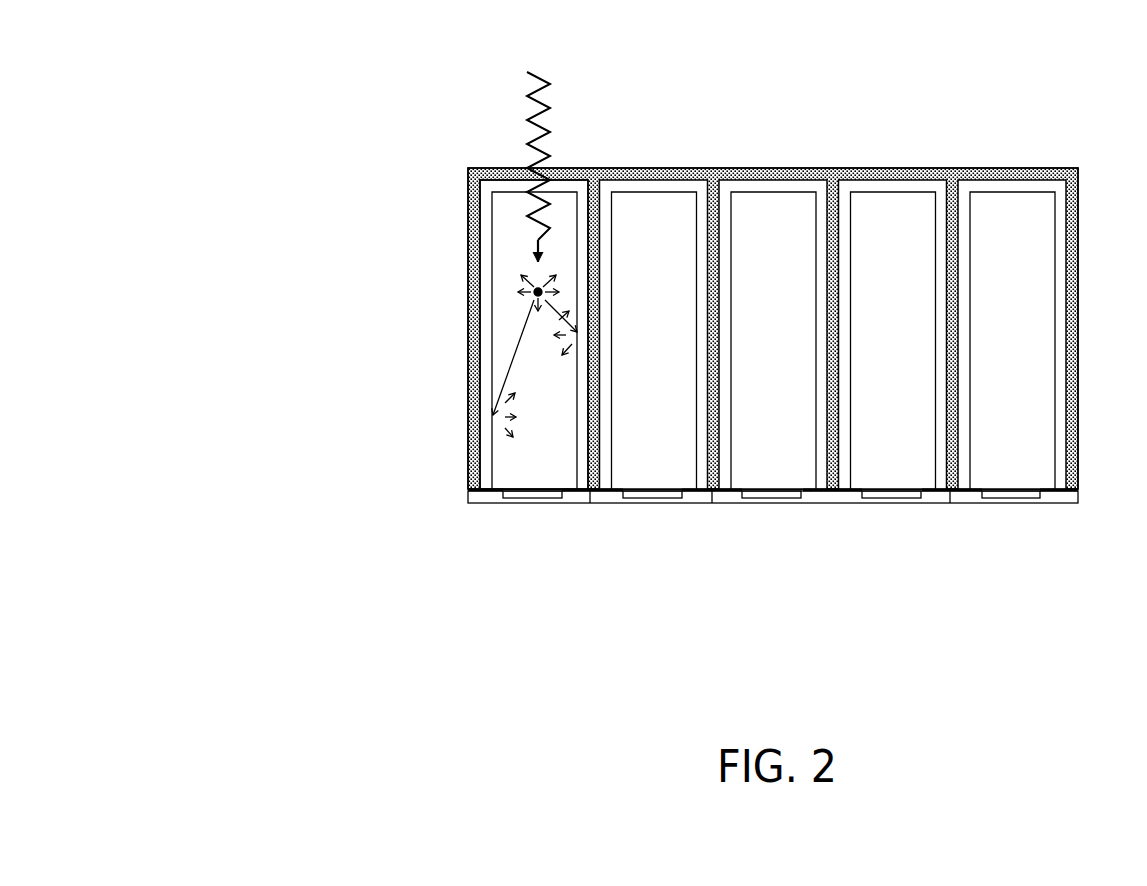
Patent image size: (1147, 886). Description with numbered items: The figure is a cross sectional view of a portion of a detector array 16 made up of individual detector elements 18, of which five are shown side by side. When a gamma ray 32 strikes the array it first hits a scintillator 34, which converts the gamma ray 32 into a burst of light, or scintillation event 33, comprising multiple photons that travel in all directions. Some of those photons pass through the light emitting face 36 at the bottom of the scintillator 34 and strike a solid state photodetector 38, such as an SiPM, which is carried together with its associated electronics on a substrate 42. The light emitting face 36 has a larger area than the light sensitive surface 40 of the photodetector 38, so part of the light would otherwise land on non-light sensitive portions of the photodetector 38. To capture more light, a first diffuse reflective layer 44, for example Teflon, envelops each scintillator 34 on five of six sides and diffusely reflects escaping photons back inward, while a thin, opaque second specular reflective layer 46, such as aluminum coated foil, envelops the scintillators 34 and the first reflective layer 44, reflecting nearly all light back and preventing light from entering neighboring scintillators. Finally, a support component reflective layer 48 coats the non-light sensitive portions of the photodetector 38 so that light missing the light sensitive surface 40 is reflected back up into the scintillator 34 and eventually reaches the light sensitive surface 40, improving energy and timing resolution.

The detector array 16 is at (312, 182).
The detector element 18 is at (492, 568).
The gamma ray 32 is at (543, 73).
The scintillation event 33 is at (546, 284).
The scintillator 34 is at (506, 330).
The light emitting face 36 is at (512, 485).
The solid state photodetector 38 is at (695, 498).
The light sensitive surface 40 is at (527, 498).
The substrate 42 is at (1062, 501).
The first diffuse reflective layer 44 is at (488, 210).
The second specular reflective layer 46 is at (825, 167).
The support component reflective layer 48 is at (820, 492).